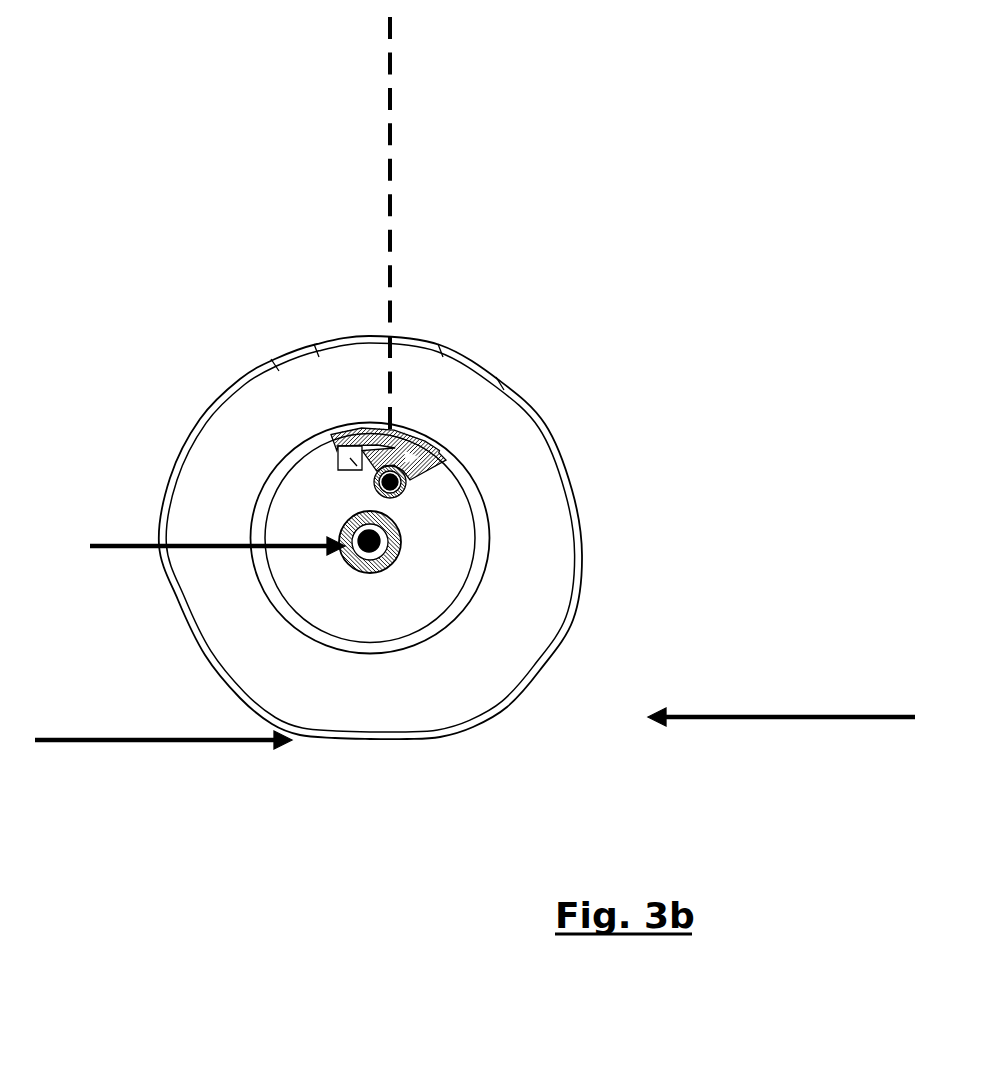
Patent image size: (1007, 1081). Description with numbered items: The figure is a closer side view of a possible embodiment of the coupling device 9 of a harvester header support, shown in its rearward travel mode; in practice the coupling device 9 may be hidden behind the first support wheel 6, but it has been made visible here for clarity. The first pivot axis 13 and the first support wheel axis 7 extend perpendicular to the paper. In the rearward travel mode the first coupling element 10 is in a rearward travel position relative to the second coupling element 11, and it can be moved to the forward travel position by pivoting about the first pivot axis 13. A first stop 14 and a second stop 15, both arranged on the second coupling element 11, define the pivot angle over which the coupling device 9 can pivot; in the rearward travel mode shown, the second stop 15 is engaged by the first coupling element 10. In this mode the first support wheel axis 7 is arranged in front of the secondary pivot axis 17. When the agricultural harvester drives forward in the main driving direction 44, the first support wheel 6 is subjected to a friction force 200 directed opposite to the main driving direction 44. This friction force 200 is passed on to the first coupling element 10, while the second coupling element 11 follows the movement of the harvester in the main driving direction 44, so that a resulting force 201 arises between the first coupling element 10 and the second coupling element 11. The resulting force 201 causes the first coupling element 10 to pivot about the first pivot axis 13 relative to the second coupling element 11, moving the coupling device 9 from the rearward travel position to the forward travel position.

The secondary pivot axis 17 is at (390, 116).
The first support wheel 6 is at (455, 692).
The first support wheel axis 7 is at (372, 556).
The coupling device 9 is at (418, 560).
The first coupling element 10 is at (393, 505).
The second coupling element 11 is at (365, 432).
The first pivot axis 13 is at (332, 520).
The first stop 14 is at (357, 453).
The second stop 15 is at (437, 465).
The friction force 200 is at (163, 725).
The resulting force 201 is at (208, 530).
The main driving direction 44 is at (781, 702).